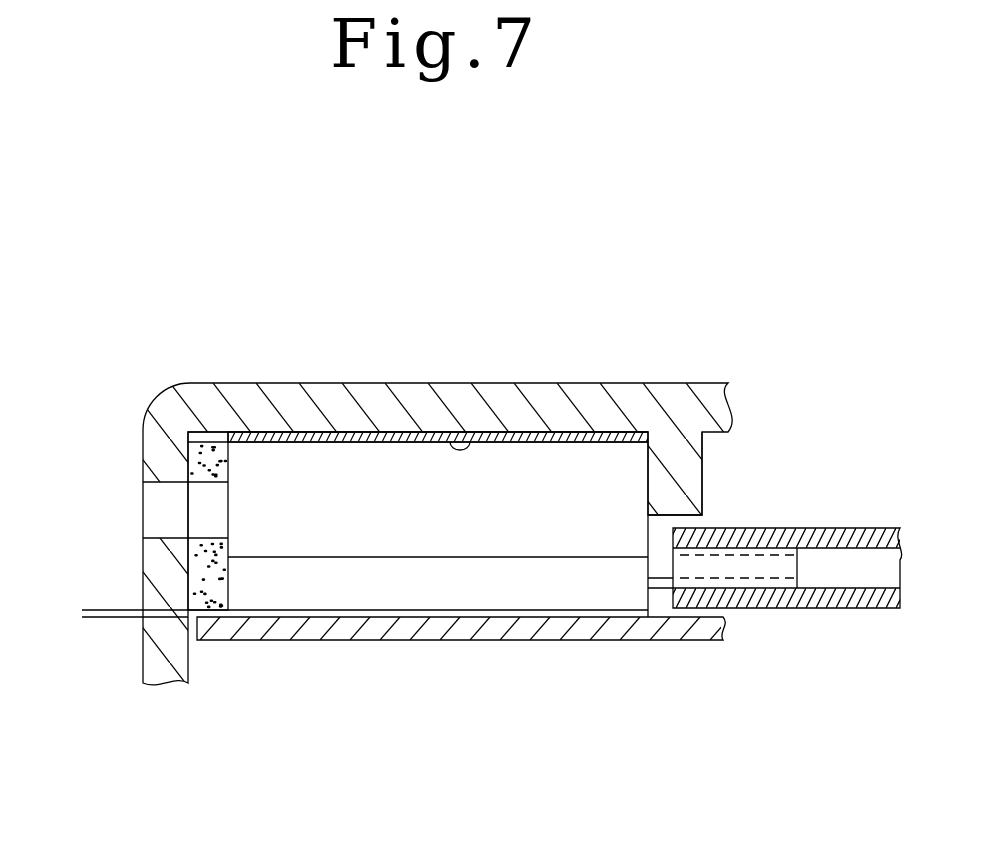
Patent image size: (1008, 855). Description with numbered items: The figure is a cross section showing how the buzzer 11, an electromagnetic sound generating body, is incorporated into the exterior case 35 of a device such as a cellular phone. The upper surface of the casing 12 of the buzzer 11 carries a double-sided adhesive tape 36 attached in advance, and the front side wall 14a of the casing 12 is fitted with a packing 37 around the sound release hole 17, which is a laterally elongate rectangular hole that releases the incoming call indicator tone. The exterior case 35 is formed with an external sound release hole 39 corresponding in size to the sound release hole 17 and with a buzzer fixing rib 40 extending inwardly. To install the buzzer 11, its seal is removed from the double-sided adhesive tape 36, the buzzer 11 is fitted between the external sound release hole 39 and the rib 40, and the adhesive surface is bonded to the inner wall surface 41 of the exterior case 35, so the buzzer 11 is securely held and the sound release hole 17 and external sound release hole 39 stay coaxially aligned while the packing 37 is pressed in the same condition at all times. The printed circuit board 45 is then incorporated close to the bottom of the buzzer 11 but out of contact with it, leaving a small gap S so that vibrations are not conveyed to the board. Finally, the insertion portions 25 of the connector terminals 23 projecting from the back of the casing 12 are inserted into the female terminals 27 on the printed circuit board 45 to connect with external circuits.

The buzzer 11 is at (529, 442).
The casing 12 is at (510, 600).
The front side wall 14a is at (215, 450).
The sound release hole 17 is at (225, 502).
The connector terminals 23 is at (757, 607).
The insertion portions 25 is at (765, 558).
The female terminals 27 is at (857, 528).
The exterior case 35 is at (403, 383).
The double-sided adhesive tape 36 is at (322, 432).
The packing 37 is at (200, 573).
The external sound release hole 39 is at (155, 537).
The buzzer fixing rib 40 is at (705, 455).
The inner wall surface 41 is at (468, 445).
The printed circuit board 45 is at (370, 641).
The small gap S is at (100, 580).